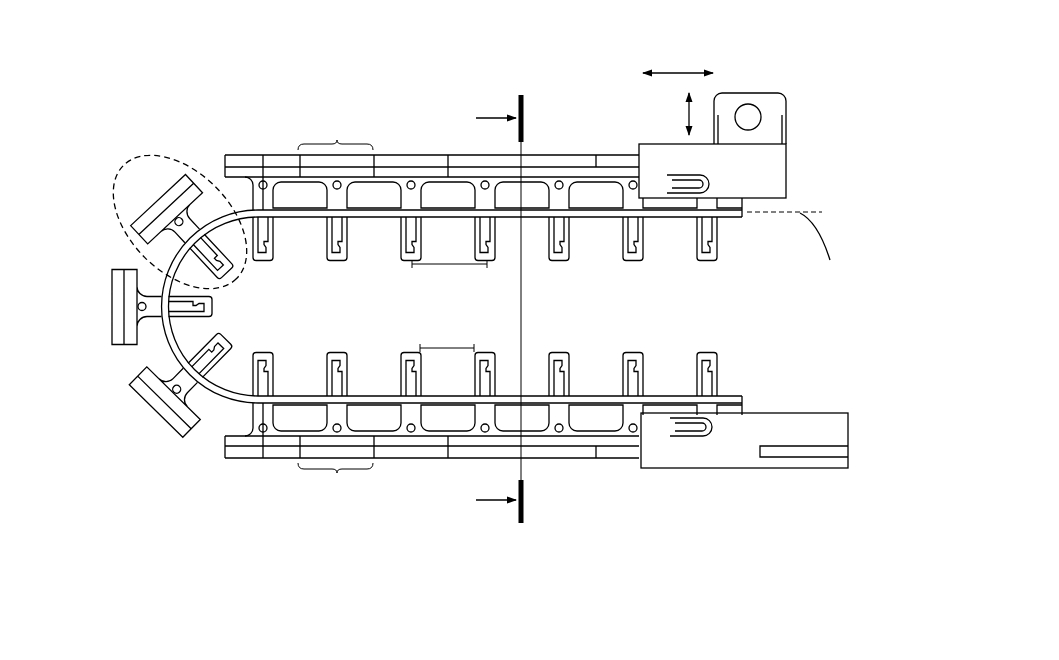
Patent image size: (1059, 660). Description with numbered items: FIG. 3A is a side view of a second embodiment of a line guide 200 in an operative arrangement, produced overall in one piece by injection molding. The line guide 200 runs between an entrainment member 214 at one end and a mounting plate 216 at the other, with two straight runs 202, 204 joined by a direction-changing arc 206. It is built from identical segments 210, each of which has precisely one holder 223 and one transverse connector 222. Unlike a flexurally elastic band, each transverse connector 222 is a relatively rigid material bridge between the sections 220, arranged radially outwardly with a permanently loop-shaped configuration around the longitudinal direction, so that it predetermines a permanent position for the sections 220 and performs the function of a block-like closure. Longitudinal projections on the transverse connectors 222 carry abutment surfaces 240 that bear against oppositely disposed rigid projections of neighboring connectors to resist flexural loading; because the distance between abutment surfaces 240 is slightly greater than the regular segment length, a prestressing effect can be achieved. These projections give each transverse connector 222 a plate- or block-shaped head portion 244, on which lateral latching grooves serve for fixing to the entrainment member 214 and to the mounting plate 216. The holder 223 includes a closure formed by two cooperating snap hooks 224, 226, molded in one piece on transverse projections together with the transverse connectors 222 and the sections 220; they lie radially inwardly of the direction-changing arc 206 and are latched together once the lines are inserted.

The line guide 200 is at (183, 122).
The first straight rail section 202 is at (382, 186).
The second straight rail section 204 is at (483, 376).
The direction-changing arc 206 is at (193, 291).
The segment 210 is at (335, 307).
The entrainment member 214 is at (760, 172).
The mounting plate 216 is at (787, 428).
The section 220 is at (287, 213).
The transverse connector 222 is at (418, 167).
The holder 223 is at (122, 165).
The snap hook 224 is at (559, 375).
The snap hook 226 is at (562, 373).
The abutment surface 240 is at (225, 448).
The head portion 244 is at (112, 316).